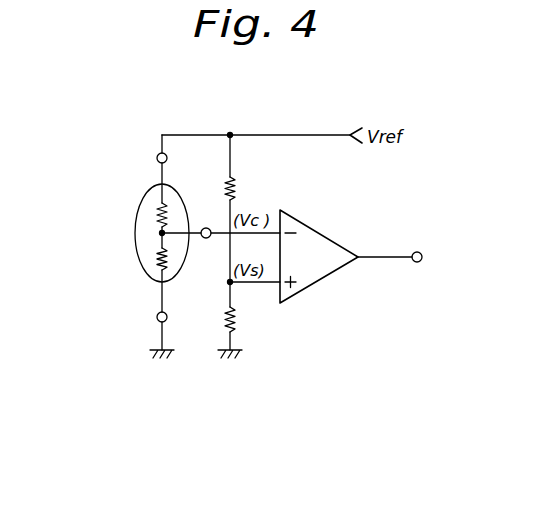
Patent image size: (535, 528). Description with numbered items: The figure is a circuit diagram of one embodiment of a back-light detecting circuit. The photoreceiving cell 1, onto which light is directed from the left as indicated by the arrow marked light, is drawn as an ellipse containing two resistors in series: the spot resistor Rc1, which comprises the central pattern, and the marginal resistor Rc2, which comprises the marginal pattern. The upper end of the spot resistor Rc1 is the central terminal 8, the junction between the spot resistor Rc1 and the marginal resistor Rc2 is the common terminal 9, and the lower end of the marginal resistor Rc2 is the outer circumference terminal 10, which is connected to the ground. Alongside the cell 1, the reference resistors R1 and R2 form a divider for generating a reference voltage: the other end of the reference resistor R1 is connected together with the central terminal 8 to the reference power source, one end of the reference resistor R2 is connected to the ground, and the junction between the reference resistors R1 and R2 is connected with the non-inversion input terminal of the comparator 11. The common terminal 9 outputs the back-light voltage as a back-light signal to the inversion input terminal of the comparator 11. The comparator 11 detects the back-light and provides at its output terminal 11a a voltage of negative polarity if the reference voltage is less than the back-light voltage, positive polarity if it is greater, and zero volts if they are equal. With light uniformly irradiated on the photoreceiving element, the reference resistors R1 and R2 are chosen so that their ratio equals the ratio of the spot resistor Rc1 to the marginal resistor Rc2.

The cell 1 is at (137, 262).
The central terminal 8 is at (157, 156).
The common terminal 9 is at (206, 227).
The outer circumference terminal 10 is at (165, 322).
The comparator 11 is at (325, 235).
The output terminal 11a is at (416, 252).
The spot resistor Rc1 is at (171, 210).
The marginal resistor Rc2 is at (170, 262).
The reference resistor R1 is at (236, 191).
The reference resistor R2 is at (238, 315).
The element light is at (124, 234).